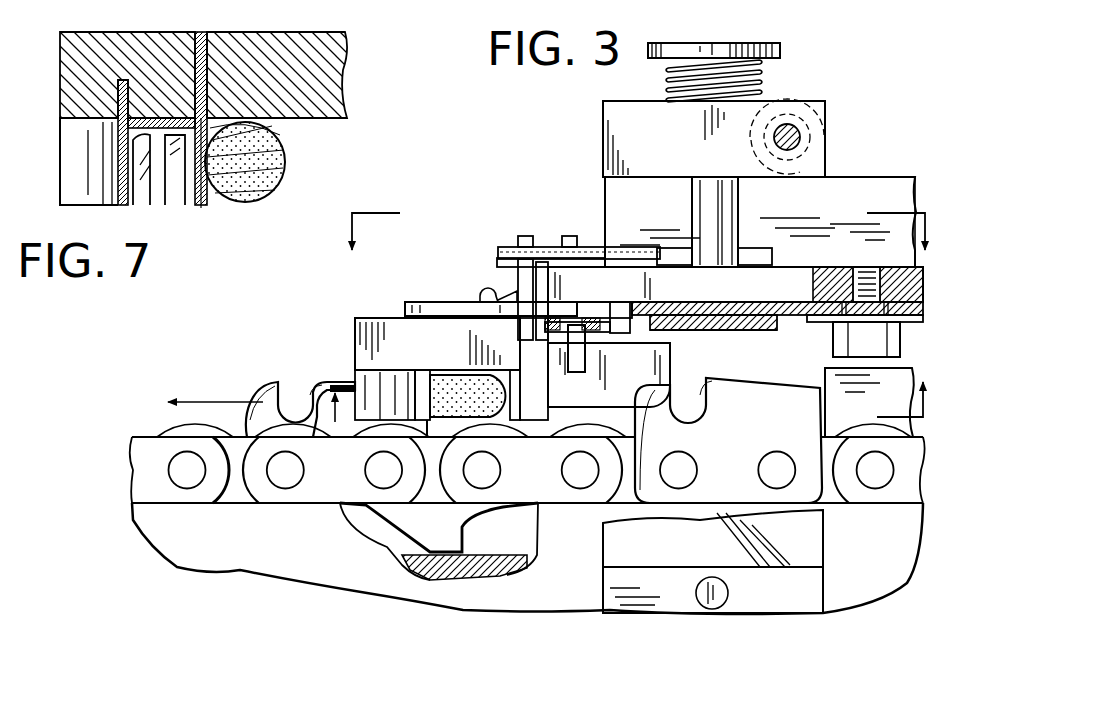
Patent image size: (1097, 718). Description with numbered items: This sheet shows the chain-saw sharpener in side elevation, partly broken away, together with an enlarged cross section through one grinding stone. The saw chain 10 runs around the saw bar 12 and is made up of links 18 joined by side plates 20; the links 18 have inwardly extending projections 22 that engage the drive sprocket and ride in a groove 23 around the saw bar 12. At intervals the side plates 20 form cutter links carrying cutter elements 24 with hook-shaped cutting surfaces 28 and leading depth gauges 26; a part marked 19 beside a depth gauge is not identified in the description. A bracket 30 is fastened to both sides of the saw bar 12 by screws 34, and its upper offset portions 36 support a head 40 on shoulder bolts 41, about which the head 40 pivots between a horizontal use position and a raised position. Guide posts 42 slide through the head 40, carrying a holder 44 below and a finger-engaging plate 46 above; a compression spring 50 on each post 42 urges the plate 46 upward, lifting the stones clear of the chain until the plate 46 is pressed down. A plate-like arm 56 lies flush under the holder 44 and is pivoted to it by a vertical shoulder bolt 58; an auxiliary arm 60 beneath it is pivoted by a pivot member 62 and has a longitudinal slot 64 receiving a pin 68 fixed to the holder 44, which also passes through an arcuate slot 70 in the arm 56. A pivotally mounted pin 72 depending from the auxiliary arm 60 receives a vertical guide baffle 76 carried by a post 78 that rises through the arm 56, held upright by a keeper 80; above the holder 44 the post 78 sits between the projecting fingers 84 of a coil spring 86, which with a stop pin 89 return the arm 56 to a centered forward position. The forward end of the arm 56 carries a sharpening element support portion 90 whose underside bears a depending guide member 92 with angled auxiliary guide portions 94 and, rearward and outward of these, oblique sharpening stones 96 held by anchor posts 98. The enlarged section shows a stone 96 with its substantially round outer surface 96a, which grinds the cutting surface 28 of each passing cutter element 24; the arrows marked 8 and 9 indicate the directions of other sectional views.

In FIG. 7, the section line 8- 8 is at (376, 232).
In FIG. 3, the section line 8- 8 is at (896, 231).
In FIG. 3, the section line 9- 9 is at (900, 399).
In FIG. 3, the saw chain 10 is at (148, 469).
In FIG. 3, the saw bar 12 is at (160, 543).
In FIG. 3, the links 18 is at (238, 452).
In FIG. 3, the depth gauge stop 19 is at (268, 403).
In FIG. 3, the side plates 20 is at (263, 495).
In FIG. 3, the projections 22 is at (443, 542).
In FIG. 3, the groove 23 is at (517, 558).
In FIG. 3, the cutter elements 24 is at (338, 385).
In FIG. 7, the leading depth gauges 26 is at (158, 192).
In FIG. 3, the leading depth gauges 26 is at (263, 397).
In FIG. 3, the cutting surfaces 28 is at (312, 397).
In FIG. 3, the bracket 30 is at (617, 203).
In FIG. 3, the screws 34 is at (728, 593).
In FIG. 3, the upper offset portions 36 is at (617, 191).
In FIG. 3, the head 40 is at (625, 134).
In FIG. 3, the shoulder bolts 41 is at (800, 136).
In FIG. 3, the guide posts 42 is at (703, 212).
In FIG. 3, the holder 44 is at (822, 275).
In FIG. 3, the finger-engaging plate 46 is at (703, 52).
In FIG. 3, the compression spring 50 is at (761, 75).
In FIG. 3, the arm 56 is at (470, 309).
In FIG. 3, the shoulder bolt 58 is at (840, 343).
In FIG. 3, the auxiliary arm 60 is at (740, 321).
In FIG. 3, the pivot member 62 is at (752, 316).
In FIG. 3, the longitudinal slot 64 is at (637, 329).
In FIG. 3, the pin 68 is at (620, 333).
In FIG. 3, the arcuate slot 70 is at (655, 303).
In FIG. 3, the pin 72 is at (574, 360).
In FIG. 3, the guide baffle 76 is at (642, 393).
In FIG. 3, the post 78 is at (523, 238).
In FIG. 3, the keeper 80 is at (515, 302).
In FIG. 3, the projecting fingers 84 is at (543, 253).
In FIG. 3, the coil spring 86 is at (772, 262).
In FIG. 3, the stop pin 89 is at (550, 258).
In FIG. 7, the sharpening element support portion 90 is at (322, 82).
In FIG. 3, the sharpening element support portion 90 is at (393, 327).
In FIG. 3, the guide member 92 is at (519, 417).
In FIG. 7, the auxiliary guide portions 94 is at (78, 160).
In FIG. 3, the auxiliary guide portions 94 is at (398, 378).
In FIG. 7, the sharpening elements 96 is at (276, 187).
In FIG. 3, the sharpening elements 96 is at (455, 380).
In FIG. 7, the outer surface 96a is at (288, 157).
In FIG. 7, the anchor posts 98 is at (199, 208).